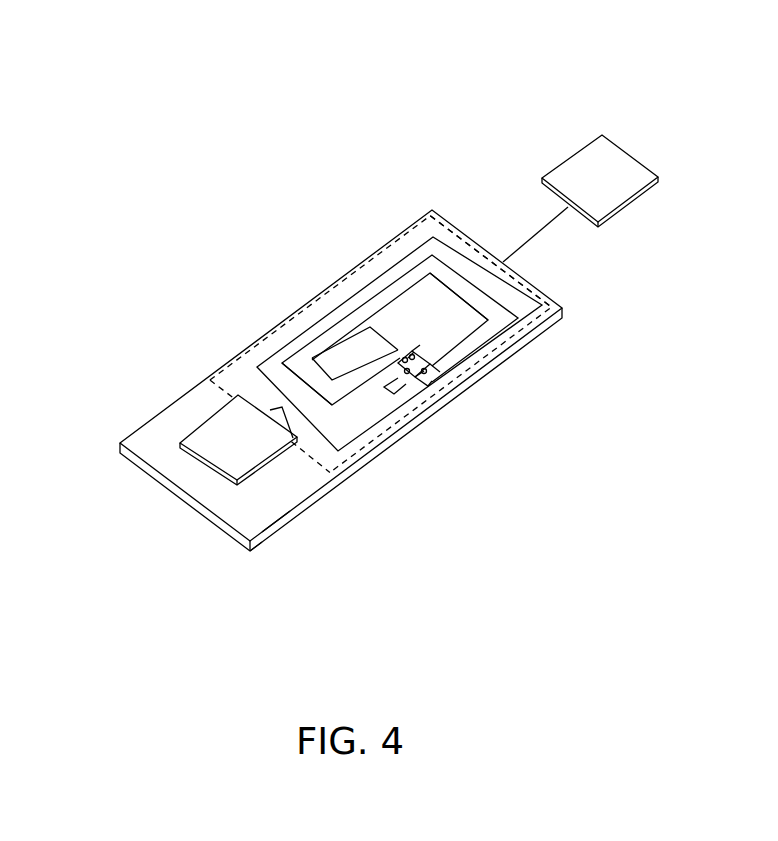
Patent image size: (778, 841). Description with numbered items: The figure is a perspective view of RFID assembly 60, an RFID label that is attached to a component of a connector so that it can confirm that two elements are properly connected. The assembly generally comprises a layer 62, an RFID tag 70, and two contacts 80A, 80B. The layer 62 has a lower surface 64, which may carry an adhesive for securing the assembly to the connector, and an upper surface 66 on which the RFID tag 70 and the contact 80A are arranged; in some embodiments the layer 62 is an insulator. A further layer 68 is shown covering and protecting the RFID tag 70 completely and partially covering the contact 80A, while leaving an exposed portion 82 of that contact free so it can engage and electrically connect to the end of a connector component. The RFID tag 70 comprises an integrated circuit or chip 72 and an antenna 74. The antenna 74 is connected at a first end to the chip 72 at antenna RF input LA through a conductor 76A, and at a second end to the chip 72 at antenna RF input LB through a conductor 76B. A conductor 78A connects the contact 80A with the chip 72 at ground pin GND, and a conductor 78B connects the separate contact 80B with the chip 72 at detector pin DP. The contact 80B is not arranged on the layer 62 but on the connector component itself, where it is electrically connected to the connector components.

The RFID assembly 60 is at (158, 150).
The layer 62 is at (230, 515).
The surface 64 is at (266, 546).
The surface 66 is at (278, 508).
The layer 68 is at (233, 362).
The RFID tag 70 is at (440, 390).
The integrated circuit (IC) or chip 72 is at (427, 357).
The antenna 74 is at (412, 362).
The conductor 76A is at (395, 385).
The conductor 76B is at (411, 356).
The conductor 78A is at (430, 390).
The conductor 78B is at (440, 380).
The contact 80A is at (217, 452).
The contact 80B is at (598, 160).
The exposed portion 82 is at (172, 437).
The antenna radio-frequency (RF) input LA is at (392, 360).
The antenna radio-frequency (RF) input LB is at (410, 360).
The ground pin GND is at (395, 366).
The detector pin DP is at (432, 371).